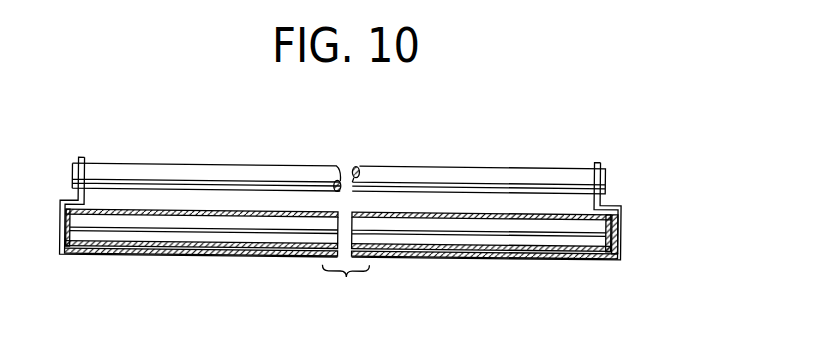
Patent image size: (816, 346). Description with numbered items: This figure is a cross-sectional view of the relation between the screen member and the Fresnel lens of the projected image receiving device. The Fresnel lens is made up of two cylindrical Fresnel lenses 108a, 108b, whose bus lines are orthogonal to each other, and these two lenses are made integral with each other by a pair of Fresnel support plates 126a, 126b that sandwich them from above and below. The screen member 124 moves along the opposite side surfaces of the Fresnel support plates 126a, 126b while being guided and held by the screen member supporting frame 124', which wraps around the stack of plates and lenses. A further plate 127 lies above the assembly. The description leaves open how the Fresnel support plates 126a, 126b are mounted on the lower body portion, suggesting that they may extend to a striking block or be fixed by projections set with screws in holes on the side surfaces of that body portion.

The cylindrical Fresnel lens 108a is at (602, 227).
The cylindrical Fresnel lens 108b is at (602, 242).
The screen member 124 is at (471, 239).
The screen member supporting frame 124' is at (188, 238).
The Fresnel support plate 126a is at (158, 210).
The Fresnel support plate 126b is at (143, 249).
The cover plate 127 is at (488, 168).